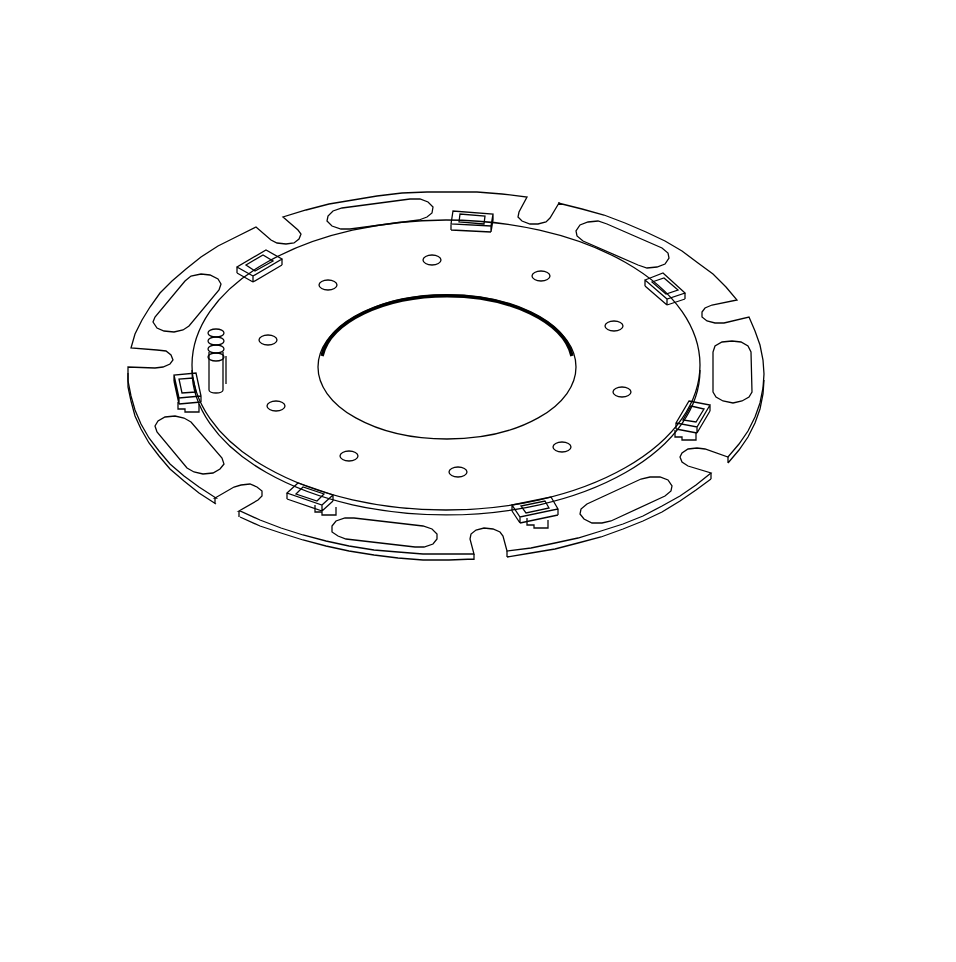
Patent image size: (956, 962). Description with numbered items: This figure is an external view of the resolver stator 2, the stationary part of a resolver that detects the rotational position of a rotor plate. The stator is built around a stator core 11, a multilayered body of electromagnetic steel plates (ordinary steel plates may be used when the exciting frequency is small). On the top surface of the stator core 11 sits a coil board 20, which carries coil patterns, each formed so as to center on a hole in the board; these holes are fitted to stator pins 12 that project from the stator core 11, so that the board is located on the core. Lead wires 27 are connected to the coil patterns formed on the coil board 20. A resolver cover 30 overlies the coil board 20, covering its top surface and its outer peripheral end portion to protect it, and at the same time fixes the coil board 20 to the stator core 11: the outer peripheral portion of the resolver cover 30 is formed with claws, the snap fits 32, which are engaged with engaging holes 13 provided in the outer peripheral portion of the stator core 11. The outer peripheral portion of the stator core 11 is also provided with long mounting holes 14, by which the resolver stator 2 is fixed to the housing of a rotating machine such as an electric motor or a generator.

The resolver stator 2 is at (521, 68).
The stator core 11 is at (712, 270).
The stator pins 12 is at (543, 271).
The engaging holes 13 is at (718, 427).
The long mounting holes 14 is at (750, 377).
The coil board 20 is at (473, 301).
The lead wires 27 is at (208, 338).
The resolver cover 30 is at (300, 449).
The snap fits 32 is at (545, 524).